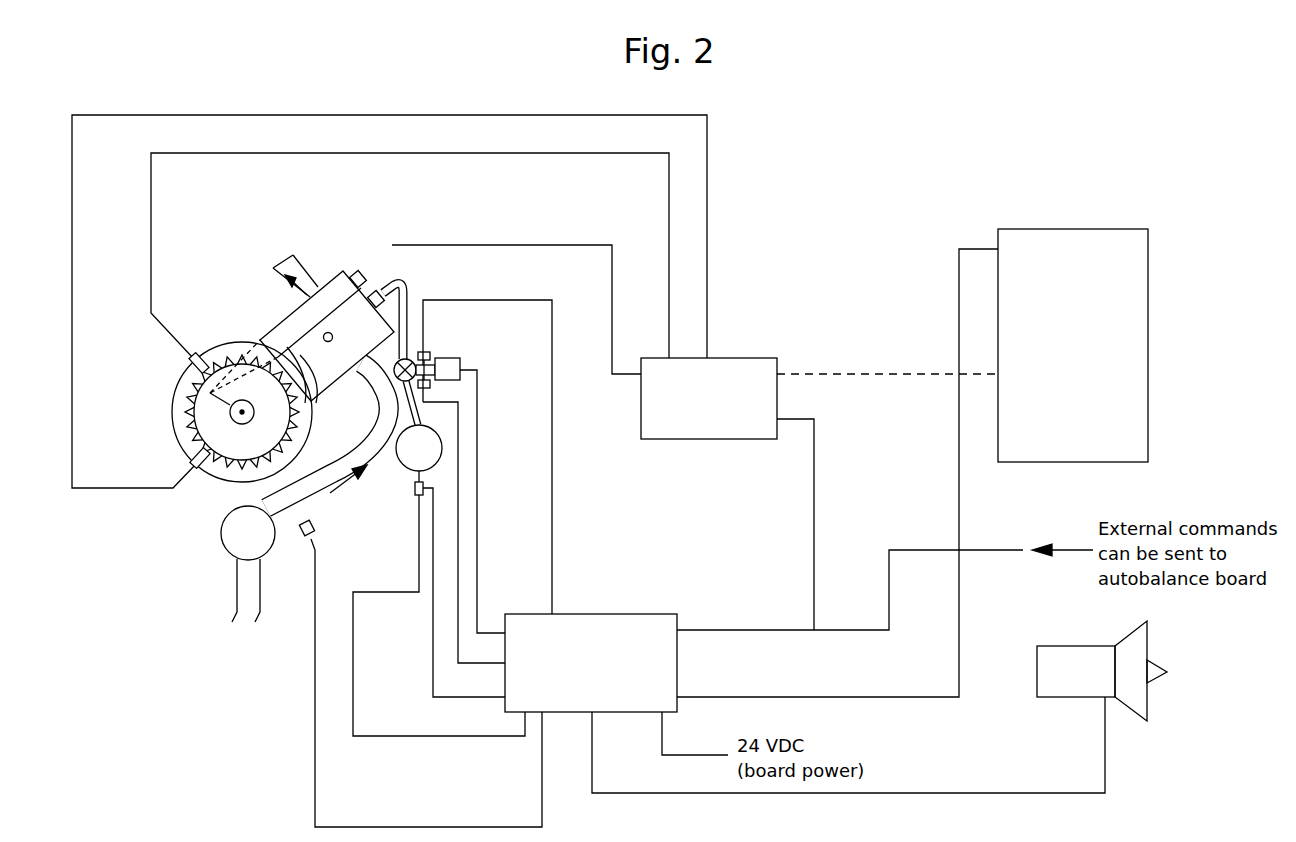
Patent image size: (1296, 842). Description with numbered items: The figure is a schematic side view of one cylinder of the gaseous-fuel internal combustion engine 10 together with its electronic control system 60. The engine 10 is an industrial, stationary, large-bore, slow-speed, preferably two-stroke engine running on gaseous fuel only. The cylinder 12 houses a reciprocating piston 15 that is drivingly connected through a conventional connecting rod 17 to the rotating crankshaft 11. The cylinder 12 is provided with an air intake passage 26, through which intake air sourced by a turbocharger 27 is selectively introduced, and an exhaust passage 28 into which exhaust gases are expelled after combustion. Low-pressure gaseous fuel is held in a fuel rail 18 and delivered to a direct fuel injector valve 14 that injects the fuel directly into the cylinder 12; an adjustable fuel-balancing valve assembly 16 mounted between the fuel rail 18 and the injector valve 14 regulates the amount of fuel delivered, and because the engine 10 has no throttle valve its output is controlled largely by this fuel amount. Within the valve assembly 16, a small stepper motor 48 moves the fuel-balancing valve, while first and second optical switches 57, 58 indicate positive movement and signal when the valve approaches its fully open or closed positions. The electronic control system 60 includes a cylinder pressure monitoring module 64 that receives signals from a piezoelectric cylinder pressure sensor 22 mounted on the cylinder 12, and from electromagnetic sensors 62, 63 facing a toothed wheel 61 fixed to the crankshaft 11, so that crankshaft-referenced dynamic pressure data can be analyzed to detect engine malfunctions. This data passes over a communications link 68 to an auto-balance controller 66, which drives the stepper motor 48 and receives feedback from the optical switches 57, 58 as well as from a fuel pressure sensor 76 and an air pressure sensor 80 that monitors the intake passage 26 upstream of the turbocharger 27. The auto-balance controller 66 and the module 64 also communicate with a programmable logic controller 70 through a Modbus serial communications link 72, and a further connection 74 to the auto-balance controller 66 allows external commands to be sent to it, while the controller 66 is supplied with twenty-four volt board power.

The internal combustion engine 10 is at (297, 248).
The crankshaft 11 is at (232, 419).
The cylinder 12 is at (270, 334).
The direct fuel injector valve 14 is at (403, 285).
The piston 15 is at (340, 323).
The adjustable fuel-balancing valve assembly 16 is at (458, 353).
The connecting rod 17 is at (318, 400).
The fuel rail 18 is at (413, 462).
The cylinder pressure sensor 22 is at (356, 272).
The air intake passage 26 is at (343, 498).
The turbocharger 27 is at (223, 540).
The exhaust passage 28 is at (272, 268).
The stepper motor 48 is at (462, 368).
The first optical switch 57 is at (430, 355).
The second optical switch 58 is at (431, 386).
The electronic control system 60 is at (678, 515).
The toothed wheel 61 is at (227, 463).
The electromagnetic sensor 62 is at (190, 455).
The upper sensor 63 is at (193, 363).
The cylinder pressure monitoring module 64 is at (756, 358).
The auto-balance controller 66 is at (677, 667).
The communications link 68 is at (814, 488).
The programmable logic controller 70 is at (1148, 345).
The communications link 72 is at (874, 374).
The wire 74 is at (959, 603).
The pressure sensor 76 is at (415, 492).
The air pressure sensor 80 is at (304, 536).